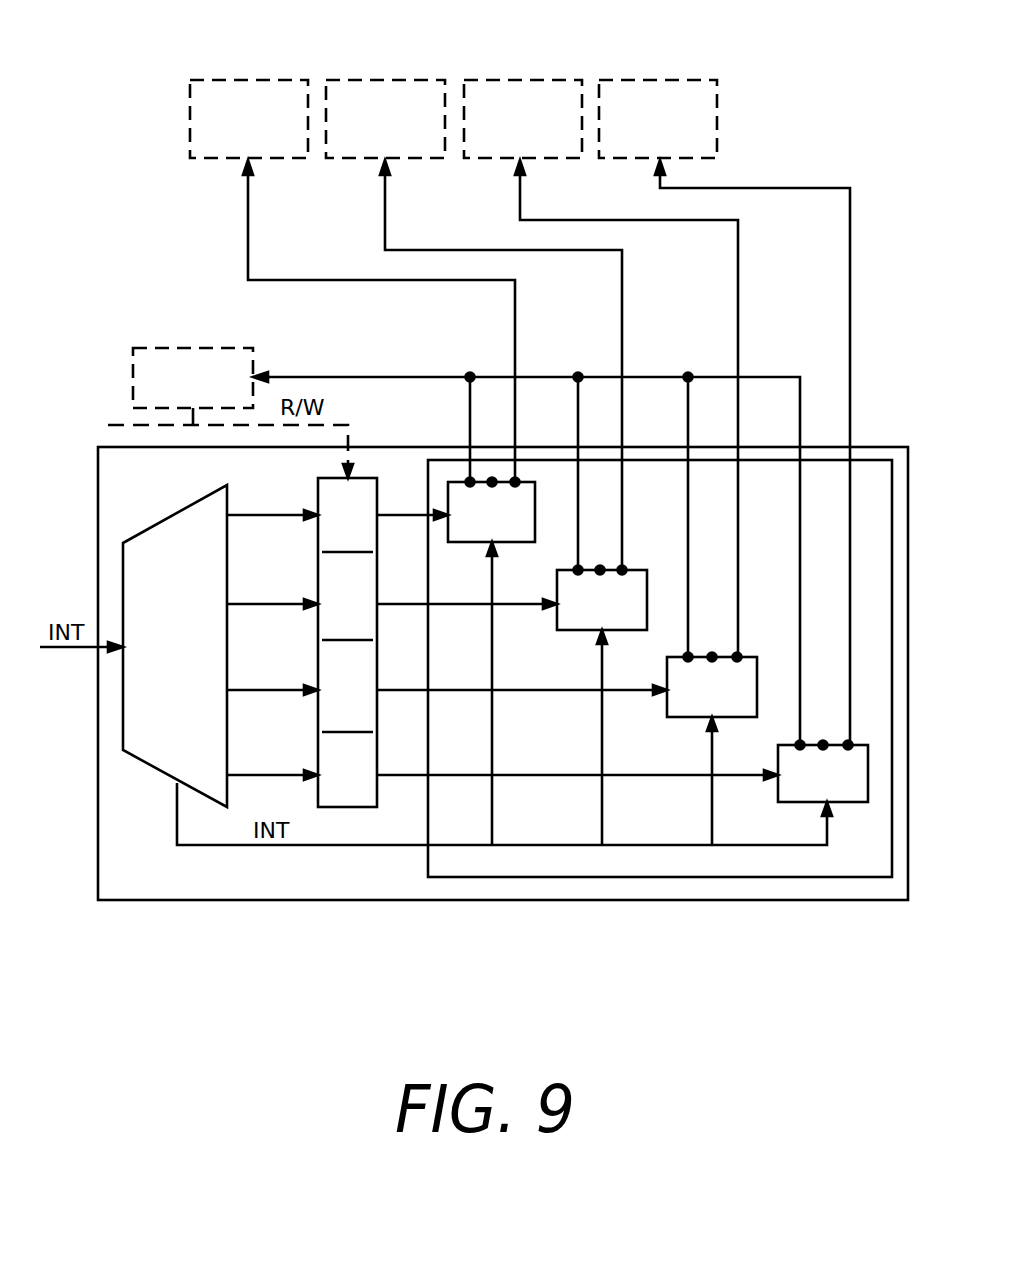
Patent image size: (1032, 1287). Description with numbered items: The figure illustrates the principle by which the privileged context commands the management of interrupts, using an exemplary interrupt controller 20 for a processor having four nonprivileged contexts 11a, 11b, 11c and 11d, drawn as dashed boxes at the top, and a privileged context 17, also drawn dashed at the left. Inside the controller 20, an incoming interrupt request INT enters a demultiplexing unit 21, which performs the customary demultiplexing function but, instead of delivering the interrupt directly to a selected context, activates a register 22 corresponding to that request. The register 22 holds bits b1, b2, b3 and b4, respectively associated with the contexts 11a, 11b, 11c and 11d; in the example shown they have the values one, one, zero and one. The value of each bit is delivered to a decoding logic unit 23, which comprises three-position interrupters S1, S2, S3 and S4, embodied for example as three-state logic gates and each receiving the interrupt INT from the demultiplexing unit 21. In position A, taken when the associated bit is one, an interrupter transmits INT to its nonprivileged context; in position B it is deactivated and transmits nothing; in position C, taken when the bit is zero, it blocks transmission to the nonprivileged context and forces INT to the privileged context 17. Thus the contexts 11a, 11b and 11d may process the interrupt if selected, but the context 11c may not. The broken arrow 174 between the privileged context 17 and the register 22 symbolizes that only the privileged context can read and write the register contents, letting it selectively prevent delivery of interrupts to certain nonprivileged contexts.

The nonprivileged context 11a is at (233, 78).
The nonprivileged context 11b is at (368, 78).
The nonprivileged context 11c is at (510, 78).
The nonprivileged context 11d is at (678, 78).
The privileged context 17 is at (175, 346).
The broken arrow 174 is at (213, 443).
The interrupt controller 20 is at (98, 822).
The demultiplexing unit 21 is at (137, 758).
The register 22 is at (345, 807).
The decoding logic unit 23 is at (577, 877).
The bit b1 is at (377, 535).
The bit b2 is at (377, 625).
The bit b3 is at (377, 715).
The bit b4 is at (377, 800).
The interrupter S1 is at (480, 545).
The interrupter S2 is at (590, 634).
The interrupter S3 is at (700, 720).
The interrupter S4 is at (790, 805).